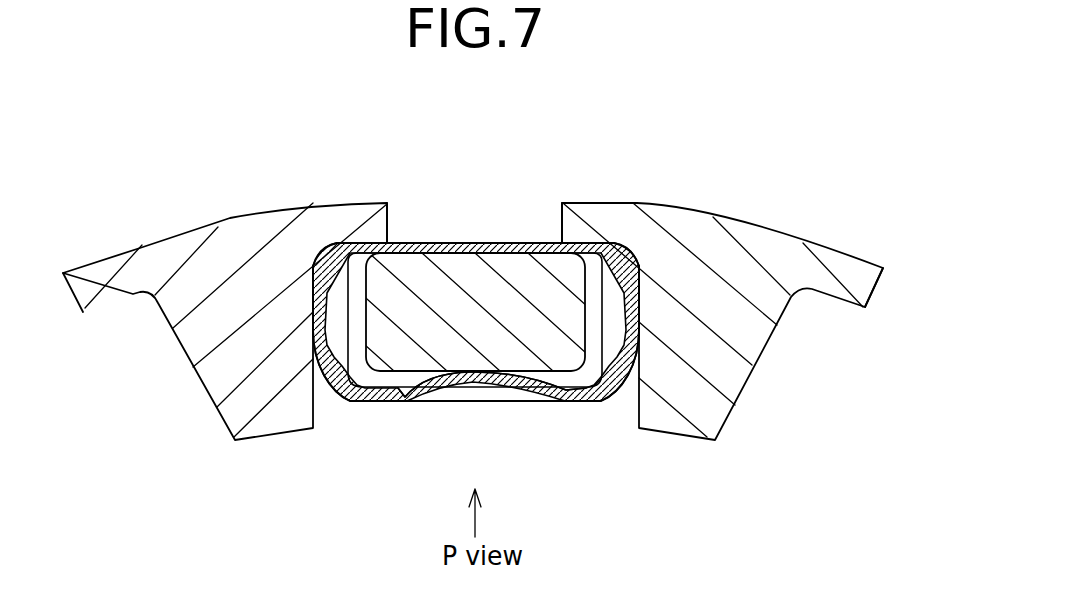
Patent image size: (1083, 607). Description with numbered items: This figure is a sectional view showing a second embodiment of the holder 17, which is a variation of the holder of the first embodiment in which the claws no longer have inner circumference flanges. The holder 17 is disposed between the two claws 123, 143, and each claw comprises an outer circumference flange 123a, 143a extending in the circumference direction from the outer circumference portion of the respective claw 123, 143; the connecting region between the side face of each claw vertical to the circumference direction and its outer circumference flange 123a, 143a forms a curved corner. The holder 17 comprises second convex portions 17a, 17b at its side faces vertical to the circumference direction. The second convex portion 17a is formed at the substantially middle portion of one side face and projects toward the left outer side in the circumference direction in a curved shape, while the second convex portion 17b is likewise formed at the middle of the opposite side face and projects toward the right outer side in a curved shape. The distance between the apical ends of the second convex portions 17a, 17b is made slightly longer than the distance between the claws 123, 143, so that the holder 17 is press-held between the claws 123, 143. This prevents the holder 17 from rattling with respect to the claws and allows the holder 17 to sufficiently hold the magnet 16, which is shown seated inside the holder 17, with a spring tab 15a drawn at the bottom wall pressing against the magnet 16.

The claw 143 is at (213, 252).
The outer circumference flange 143a is at (96, 263).
The claw 123 is at (703, 243).
The outer circumference flange 123a is at (577, 222).
The holder 17 is at (506, 246).
The second convex portion 17a is at (315, 335).
The second convex portion 17b is at (636, 335).
The magnet 16 is at (425, 280).
The spring tab (biasing portion) 15a is at (472, 383).